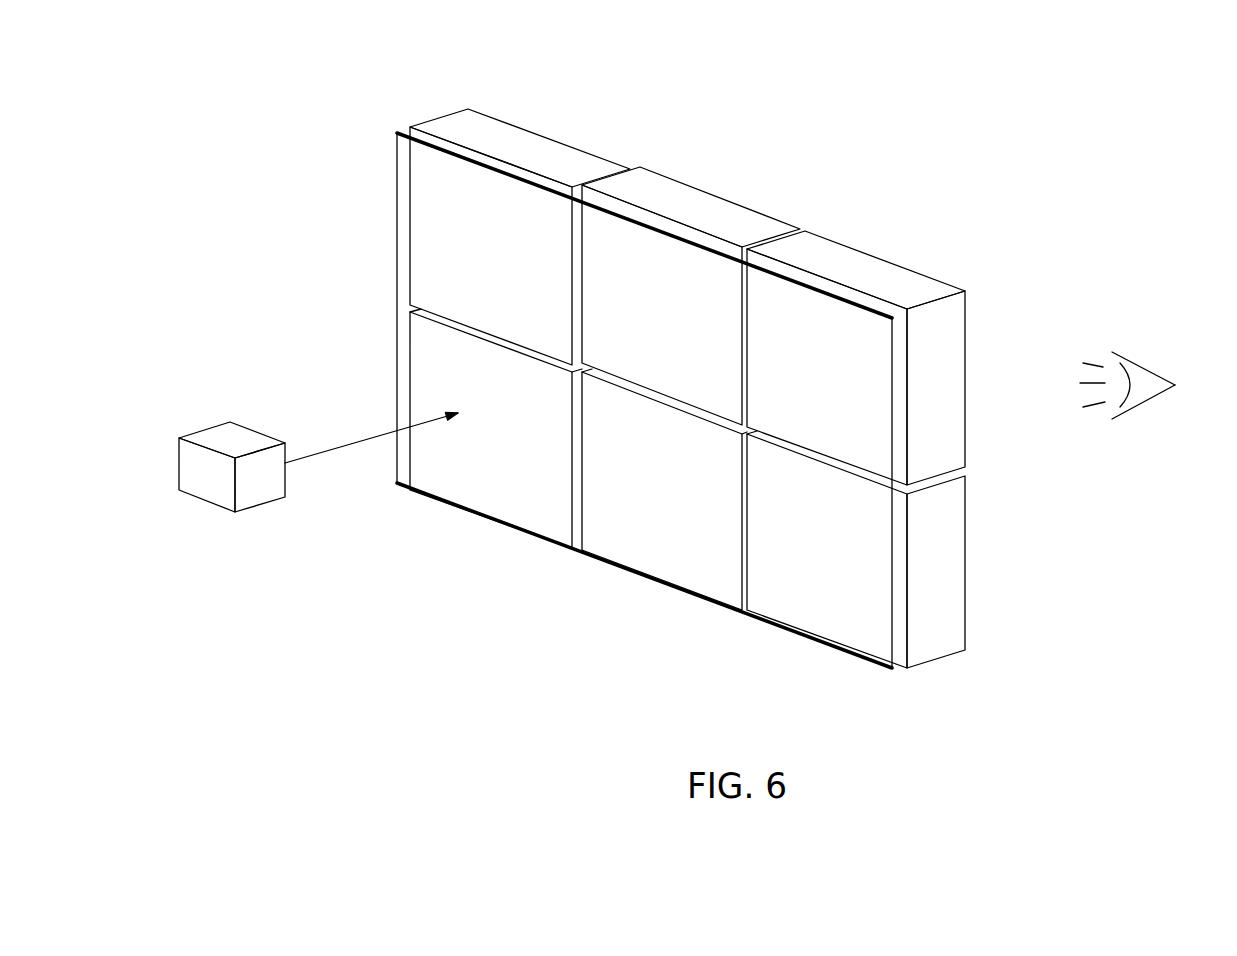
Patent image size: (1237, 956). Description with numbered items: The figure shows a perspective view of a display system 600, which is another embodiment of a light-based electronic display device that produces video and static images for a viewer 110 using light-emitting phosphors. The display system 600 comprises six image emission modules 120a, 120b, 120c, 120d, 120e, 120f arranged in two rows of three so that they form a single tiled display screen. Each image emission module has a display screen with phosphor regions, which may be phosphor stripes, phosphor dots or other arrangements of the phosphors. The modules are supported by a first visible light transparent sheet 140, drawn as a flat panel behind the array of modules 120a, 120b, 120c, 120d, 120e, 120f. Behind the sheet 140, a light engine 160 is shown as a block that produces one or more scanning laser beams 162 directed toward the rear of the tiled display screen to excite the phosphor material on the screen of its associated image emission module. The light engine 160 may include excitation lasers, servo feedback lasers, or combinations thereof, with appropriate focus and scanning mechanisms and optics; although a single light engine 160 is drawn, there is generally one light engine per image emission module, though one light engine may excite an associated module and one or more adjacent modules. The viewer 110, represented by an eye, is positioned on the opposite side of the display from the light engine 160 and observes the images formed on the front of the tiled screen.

The display system 600 is at (332, 130).
The first visible light transparent sheet 140 is at (397, 259).
The image emission module 120a is at (454, 132).
The image emission module 120b is at (682, 203).
The image emission module 120c is at (858, 264).
The image emission module 120d is at (492, 502).
The image emission module 120e is at (657, 562).
The image emission module 120f is at (800, 632).
The light engine 160 is at (223, 486).
The scanning laser beam 162 is at (313, 452).
The viewer 110 is at (1145, 403).